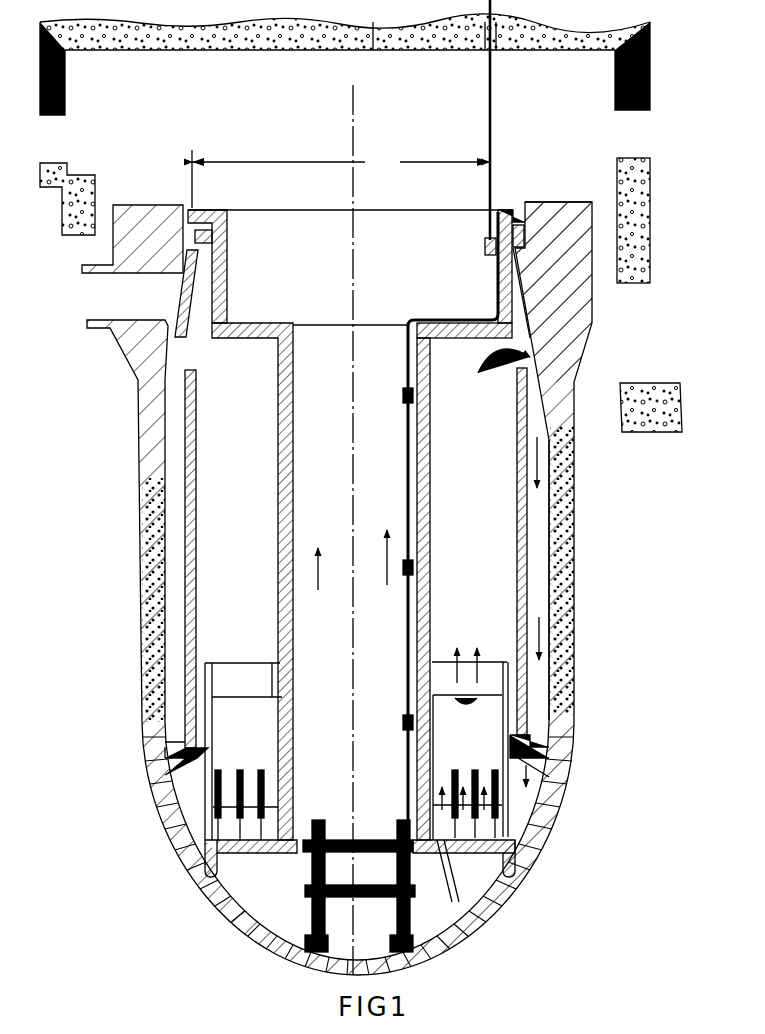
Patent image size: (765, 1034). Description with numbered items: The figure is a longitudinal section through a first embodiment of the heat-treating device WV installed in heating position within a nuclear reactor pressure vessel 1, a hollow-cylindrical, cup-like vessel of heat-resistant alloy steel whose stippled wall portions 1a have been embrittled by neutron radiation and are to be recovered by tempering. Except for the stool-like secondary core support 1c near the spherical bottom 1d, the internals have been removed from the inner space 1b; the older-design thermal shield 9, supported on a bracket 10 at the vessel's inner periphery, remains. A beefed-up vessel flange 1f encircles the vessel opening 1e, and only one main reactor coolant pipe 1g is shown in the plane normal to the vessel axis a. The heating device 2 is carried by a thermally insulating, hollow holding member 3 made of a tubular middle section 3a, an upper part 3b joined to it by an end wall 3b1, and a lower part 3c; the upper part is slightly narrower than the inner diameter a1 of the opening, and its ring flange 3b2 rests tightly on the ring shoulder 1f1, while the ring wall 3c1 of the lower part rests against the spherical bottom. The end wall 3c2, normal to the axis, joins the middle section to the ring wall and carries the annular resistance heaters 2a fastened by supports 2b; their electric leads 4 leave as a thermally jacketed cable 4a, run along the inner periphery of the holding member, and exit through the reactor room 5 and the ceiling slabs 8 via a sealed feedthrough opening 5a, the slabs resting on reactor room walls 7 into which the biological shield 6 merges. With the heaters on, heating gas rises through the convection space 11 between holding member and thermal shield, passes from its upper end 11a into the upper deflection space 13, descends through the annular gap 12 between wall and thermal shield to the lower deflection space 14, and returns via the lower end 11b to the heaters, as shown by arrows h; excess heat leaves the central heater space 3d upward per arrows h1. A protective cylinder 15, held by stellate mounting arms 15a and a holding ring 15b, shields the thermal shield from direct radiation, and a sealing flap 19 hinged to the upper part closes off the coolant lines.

The nuclear reactor pressure vessel 1 is at (601, 460).
The wall portions 1a is at (152, 566).
The inner space 1b is at (498, 808).
The secondary core support 1c is at (405, 883).
The spherical bottom 1d is at (489, 901).
The vessel opening 1e is at (185, 262).
The vessel flange 1f is at (584, 290).
The ring shoulder 1f1 is at (530, 233).
The main reactor coolant pipe 1g is at (100, 255).
The heating device 2 is at (505, 816).
The annular resistance heaters 2a is at (260, 770).
The supports 2b is at (222, 828).
The holding member 3 is at (430, 478).
The tubular middle section 3a is at (293, 458).
The upper part 3b is at (511, 300).
The end wall 3b1 is at (450, 340).
The ring flange 3b2 is at (511, 212).
The lower part 3c is at (447, 852).
The ring wall 3c1 is at (507, 858).
The end wall 3c2 is at (258, 854).
The central heater space 3d is at (350, 486).
The electric leads 4 is at (448, 884).
The cable 4a is at (405, 742).
The reactor room 5 is at (237, 95).
The feedthrough opening 5a is at (505, 127).
The biological shield 6 is at (660, 433).
The reactor room walls 7 is at (633, 88).
The ceiling slabs 8 is at (138, 42).
The thermal shield 9 is at (527, 547).
The bracket 10 is at (172, 755).
The convection space 11 is at (480, 518).
The upper end of convection space 11a is at (478, 365).
The lower end of convection space 11b is at (448, 780).
The annular gap 12 is at (538, 510).
The upper deflection space 13 is at (512, 338).
The lower deflection space 14 is at (518, 828).
The protective cylinder 15 is at (208, 663).
The stellate mounting arms 15a is at (254, 667).
The holding ring 15b is at (272, 690).
The sealing flap 19 is at (177, 338).
The pressure vessel axis a is at (352, 500).
The inner diameter of the vessel opening a1 is at (340, 177).
The heating gas flow arrows h is at (580, 655).
The excess heat flow arrows h1 is at (352, 560).
The heat-treating device WV is at (616, 573).